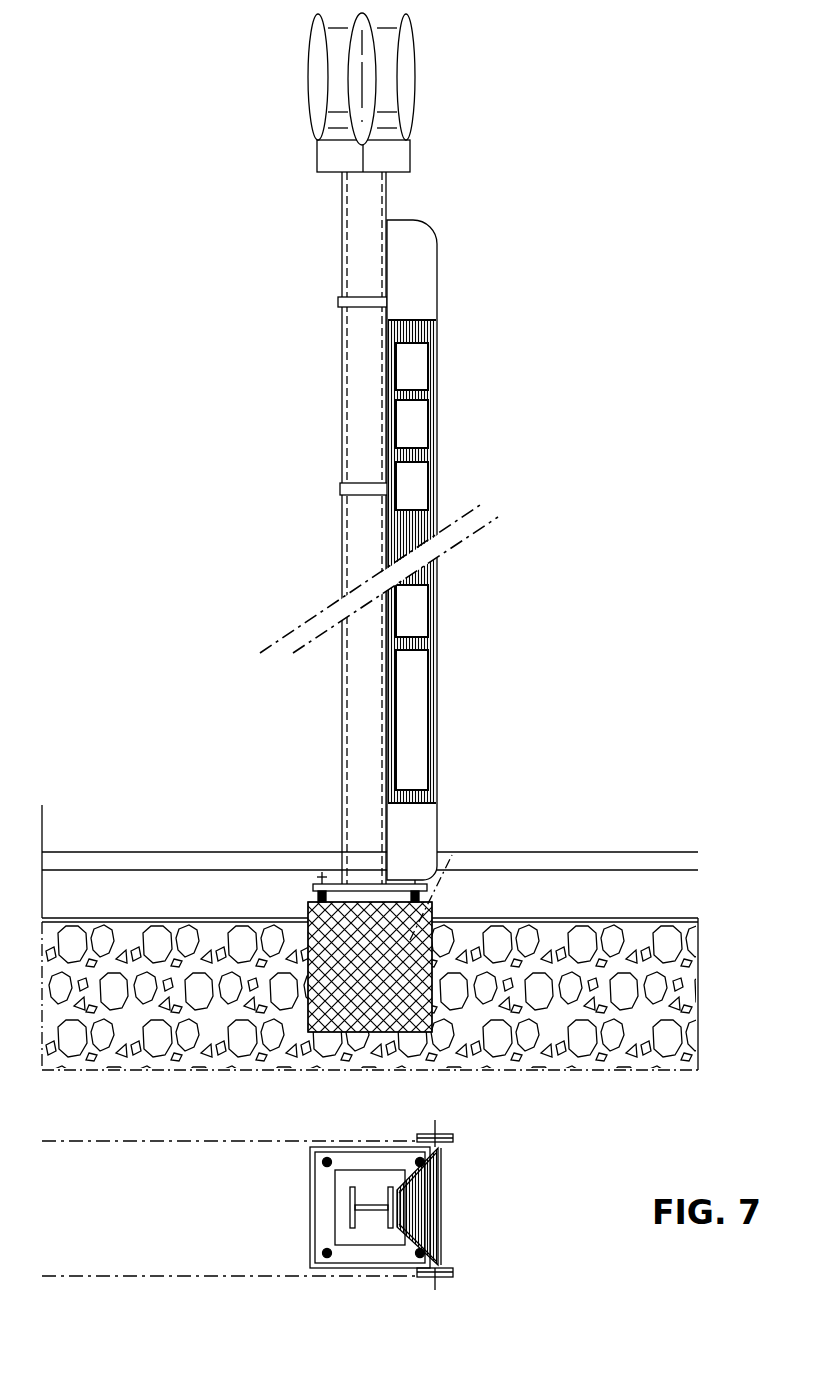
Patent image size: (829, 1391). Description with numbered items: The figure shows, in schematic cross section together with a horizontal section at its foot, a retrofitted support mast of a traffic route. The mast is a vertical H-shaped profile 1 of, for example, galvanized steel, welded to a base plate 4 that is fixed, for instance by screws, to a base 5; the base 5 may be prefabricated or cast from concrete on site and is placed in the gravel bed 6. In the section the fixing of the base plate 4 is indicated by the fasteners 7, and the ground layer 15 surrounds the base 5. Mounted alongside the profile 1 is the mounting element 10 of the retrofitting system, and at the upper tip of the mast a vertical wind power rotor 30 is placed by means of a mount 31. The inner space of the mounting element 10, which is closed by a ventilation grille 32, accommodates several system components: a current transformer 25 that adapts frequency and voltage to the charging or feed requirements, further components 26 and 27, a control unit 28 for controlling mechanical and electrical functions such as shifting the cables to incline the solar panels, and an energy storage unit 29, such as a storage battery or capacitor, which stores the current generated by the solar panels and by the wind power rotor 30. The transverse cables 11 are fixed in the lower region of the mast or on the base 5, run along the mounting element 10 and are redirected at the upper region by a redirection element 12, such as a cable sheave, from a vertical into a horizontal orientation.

The H-shaped profile 1 is at (362, 222).
The base plate 4 is at (398, 887).
The base 5 is at (445, 913).
The gravel bed 6 is at (665, 925).
The anchor bolts 7 is at (322, 880).
The mounting element 10 is at (425, 250).
The transverse cables 11 is at (190, 1143).
The redirection element 12 is at (437, 1130).
The gravel bed 15 is at (560, 940).
The current transformer 25 is at (415, 367).
The system component 26 is at (418, 418).
The system component 27 is at (402, 480).
The control unit 28 is at (405, 612).
The energy storage unit 29 is at (410, 698).
The vertical wind power rotor 30 is at (415, 70).
The mount 31 is at (398, 160).
The ventilation grille 32 is at (412, 330).